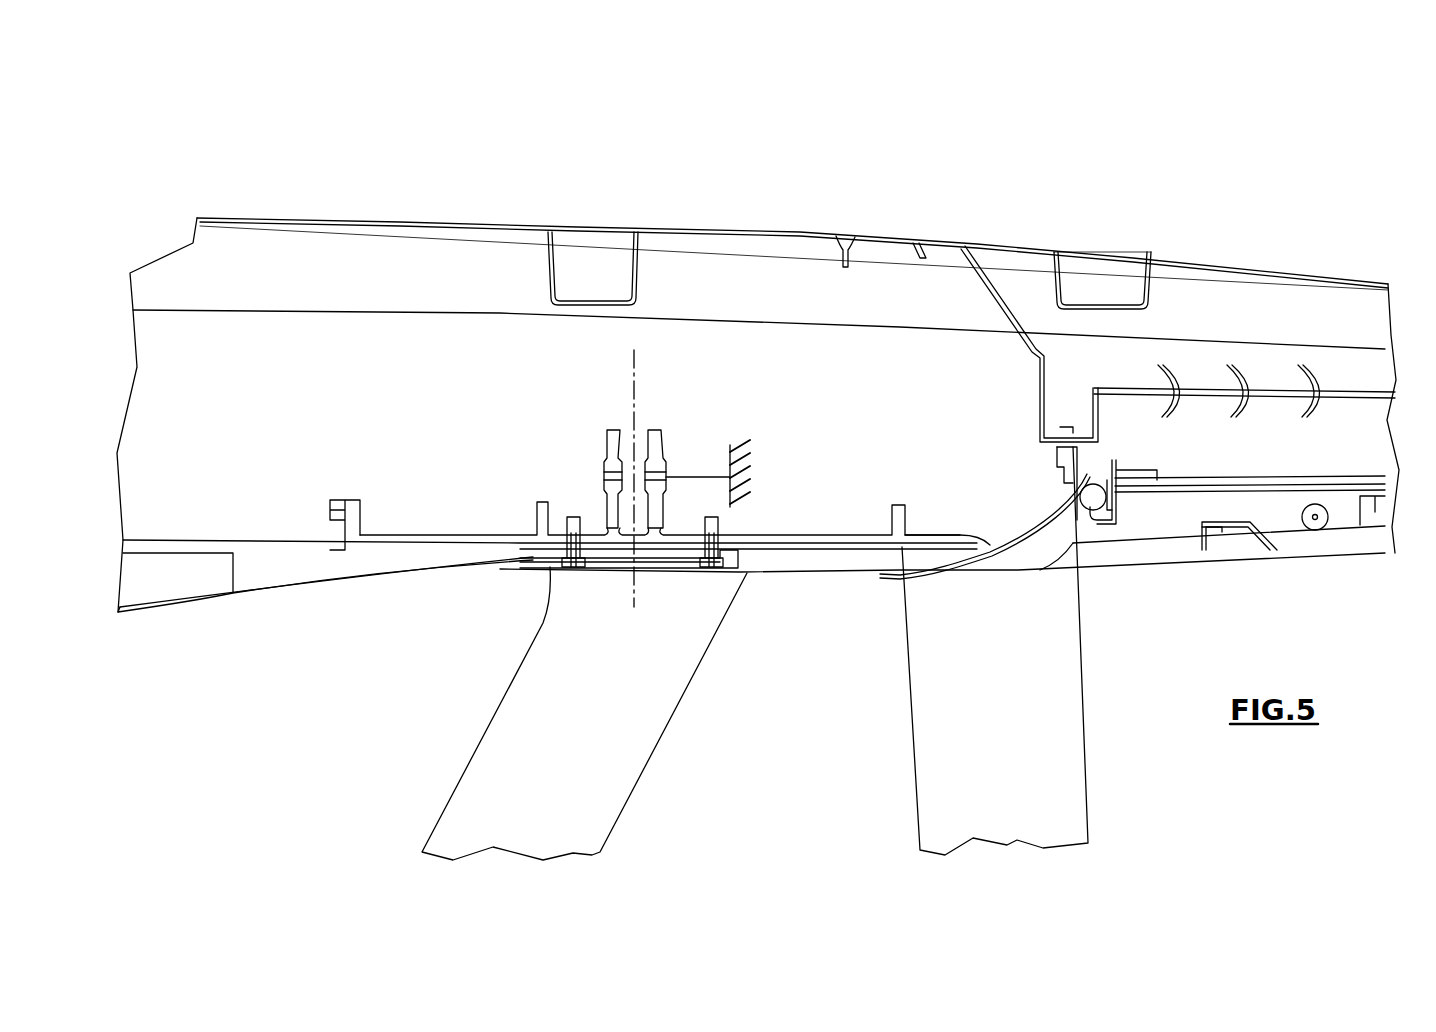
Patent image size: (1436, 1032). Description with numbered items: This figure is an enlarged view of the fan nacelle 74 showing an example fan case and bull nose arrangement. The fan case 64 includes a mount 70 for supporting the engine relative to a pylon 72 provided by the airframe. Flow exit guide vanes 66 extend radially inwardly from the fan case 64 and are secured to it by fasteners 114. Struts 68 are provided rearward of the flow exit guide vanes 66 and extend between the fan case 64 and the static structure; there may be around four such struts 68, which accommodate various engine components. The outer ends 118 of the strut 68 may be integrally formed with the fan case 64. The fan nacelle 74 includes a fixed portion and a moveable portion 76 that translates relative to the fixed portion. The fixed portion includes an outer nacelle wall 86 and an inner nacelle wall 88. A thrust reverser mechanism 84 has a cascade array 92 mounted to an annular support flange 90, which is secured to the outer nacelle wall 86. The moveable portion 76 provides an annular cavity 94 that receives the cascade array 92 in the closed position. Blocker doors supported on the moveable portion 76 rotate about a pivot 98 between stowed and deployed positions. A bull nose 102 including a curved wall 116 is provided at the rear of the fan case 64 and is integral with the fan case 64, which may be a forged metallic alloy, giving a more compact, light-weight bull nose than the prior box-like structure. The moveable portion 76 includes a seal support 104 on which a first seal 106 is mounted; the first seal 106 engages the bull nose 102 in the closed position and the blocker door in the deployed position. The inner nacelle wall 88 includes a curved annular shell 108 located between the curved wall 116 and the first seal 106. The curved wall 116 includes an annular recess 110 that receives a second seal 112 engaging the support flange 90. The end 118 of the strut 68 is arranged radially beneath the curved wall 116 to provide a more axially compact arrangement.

The fan case 64 is at (448, 520).
The flow exit guide vanes 66 is at (618, 783).
The struts 68 is at (1073, 798).
The mount 70 is at (606, 442).
The pylon 72 is at (725, 445).
The fan nacelle 74 is at (800, 158).
The moveable portion 76 is at (1313, 270).
The thrust reverser mechanism 84 is at (1316, 333).
The outer nacelle wall 86 is at (798, 235).
The inner nacelle wall 88 is at (785, 577).
The support flange 90 is at (1033, 352).
The cascade array 92 is at (1176, 379).
The annular cavity 94 is at (1361, 455).
The pivot 98 is at (1315, 521).
The bull nose 102 is at (1050, 530).
The seal support 104 is at (1115, 519).
The first seal 106 is at (1097, 484).
The curved annular shell 108 is at (990, 560).
The annular recess 110 is at (1069, 478).
The second seal 112 is at (1062, 458).
The fasteners 114 is at (710, 573).
The curved wall 116 is at (1054, 507).
The outer ends 118 is at (929, 557).